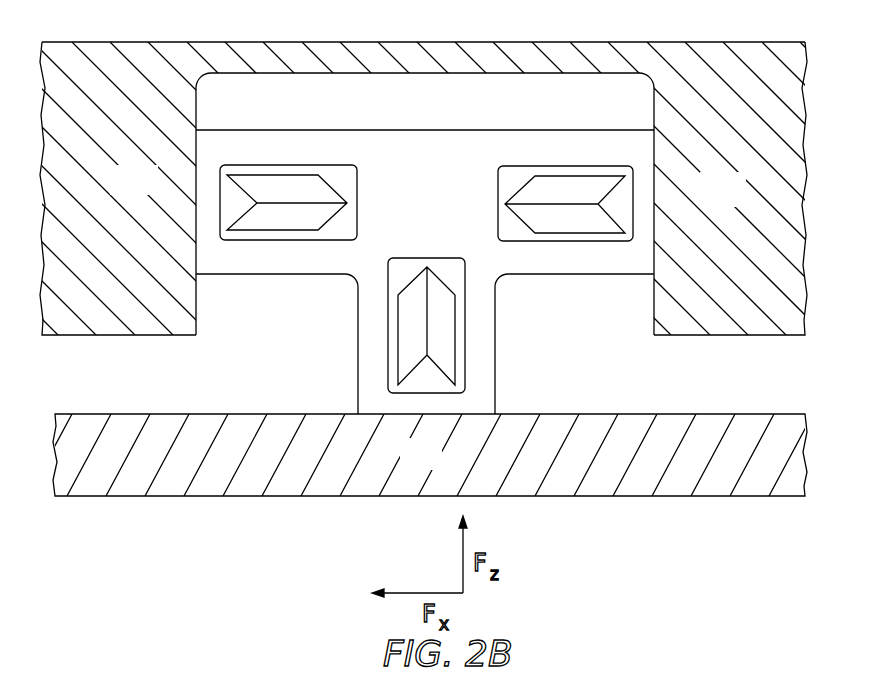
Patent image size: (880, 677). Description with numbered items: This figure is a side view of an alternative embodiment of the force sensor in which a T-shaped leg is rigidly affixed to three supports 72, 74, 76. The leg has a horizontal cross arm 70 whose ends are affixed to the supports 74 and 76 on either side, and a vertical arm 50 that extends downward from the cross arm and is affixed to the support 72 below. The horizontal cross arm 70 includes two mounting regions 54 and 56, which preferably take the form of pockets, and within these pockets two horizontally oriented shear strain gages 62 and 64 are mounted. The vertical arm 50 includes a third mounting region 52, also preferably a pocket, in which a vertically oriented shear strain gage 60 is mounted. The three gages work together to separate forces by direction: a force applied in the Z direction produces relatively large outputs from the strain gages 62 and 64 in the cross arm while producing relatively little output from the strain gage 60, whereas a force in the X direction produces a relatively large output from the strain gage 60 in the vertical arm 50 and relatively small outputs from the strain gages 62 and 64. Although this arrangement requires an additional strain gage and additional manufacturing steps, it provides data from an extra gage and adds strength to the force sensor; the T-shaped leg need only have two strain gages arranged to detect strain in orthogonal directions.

The vertical arm 50 is at (370, 387).
The mounting region 52 is at (455, 288).
The mounting region 54 is at (585, 237).
The mounting region 56 is at (272, 233).
The shear strain gage 60 is at (442, 335).
The shear strain gage 62 is at (540, 222).
The shear strain gage 64 is at (303, 215).
The horizontal cross arm 70 is at (315, 147).
The support 72 is at (437, 465).
The support 74 is at (739, 203).
The support 76 is at (151, 192).